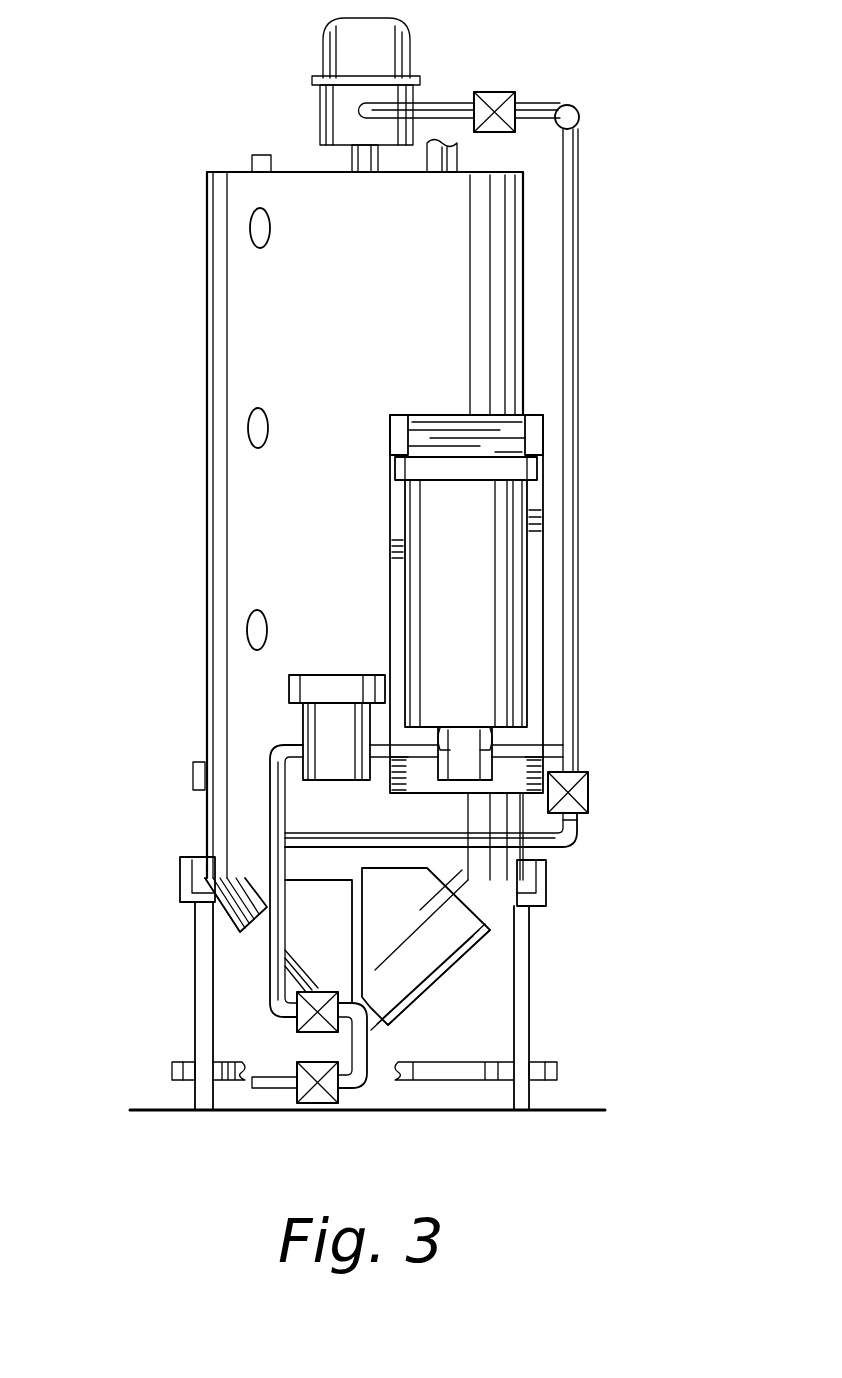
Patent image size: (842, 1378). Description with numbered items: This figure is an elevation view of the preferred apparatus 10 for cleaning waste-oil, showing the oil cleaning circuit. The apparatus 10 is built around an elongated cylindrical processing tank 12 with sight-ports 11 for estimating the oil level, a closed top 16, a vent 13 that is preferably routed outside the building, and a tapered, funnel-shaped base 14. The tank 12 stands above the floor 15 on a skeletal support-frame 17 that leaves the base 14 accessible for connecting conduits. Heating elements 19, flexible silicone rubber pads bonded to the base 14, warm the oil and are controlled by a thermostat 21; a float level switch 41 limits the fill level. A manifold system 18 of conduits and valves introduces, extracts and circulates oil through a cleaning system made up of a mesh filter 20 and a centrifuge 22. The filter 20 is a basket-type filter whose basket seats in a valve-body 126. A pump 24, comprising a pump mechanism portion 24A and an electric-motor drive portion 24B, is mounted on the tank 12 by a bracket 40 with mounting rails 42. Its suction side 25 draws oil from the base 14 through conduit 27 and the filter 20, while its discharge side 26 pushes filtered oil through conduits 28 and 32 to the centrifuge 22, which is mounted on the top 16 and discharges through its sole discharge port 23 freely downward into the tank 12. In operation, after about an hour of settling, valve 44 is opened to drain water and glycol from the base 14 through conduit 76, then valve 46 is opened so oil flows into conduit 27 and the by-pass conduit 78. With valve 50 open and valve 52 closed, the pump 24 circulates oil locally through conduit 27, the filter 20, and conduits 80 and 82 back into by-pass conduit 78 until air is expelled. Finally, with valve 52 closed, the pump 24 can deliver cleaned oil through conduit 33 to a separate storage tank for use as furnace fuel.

The apparatus 10 is at (152, 612).
The sight-ports 11 is at (271, 228).
The processing tank 12 is at (206, 410).
The vent 13 is at (443, 160).
The base 14 is at (485, 905).
The floor 15 is at (465, 1112).
The top 16 is at (232, 170).
The support-frame 17 is at (532, 1010).
The manifold system 18 is at (577, 852).
The heating elements 19 is at (312, 948).
The mesh filter 20 is at (333, 673).
The thermostat 21 is at (202, 760).
The centrifuge 22 is at (411, 60).
The discharge port 23 is at (352, 160).
The pump 24 is at (530, 625).
The pump mechanism portion 24A is at (462, 745).
The electric-motor drive portion 24B is at (530, 556).
The suction side 25 is at (452, 745).
The discharge side 26 is at (478, 745).
The conduit 27 is at (268, 770).
The conduit 28 is at (580, 327).
The conduit 32 is at (533, 110).
The conduit 33 is at (580, 118).
The bracket 40 is at (548, 457).
The float level switch 41 is at (250, 163).
The mounting rails 42 is at (540, 440).
The valve 44 is at (312, 1105).
The valve 46 is at (318, 1028).
The valve 50 is at (588, 790).
The valve 52 is at (498, 100).
The conduit 76 is at (275, 1092).
The by-pass conduit 78 is at (552, 838).
The conduit 80 is at (383, 752).
The conduit 82 is at (552, 752).
The valve-body 126 is at (345, 765).